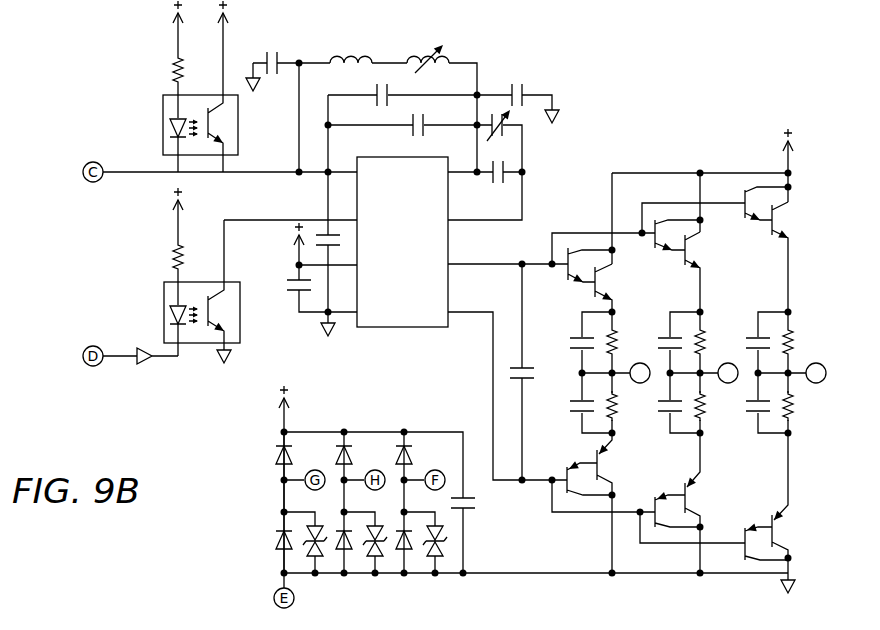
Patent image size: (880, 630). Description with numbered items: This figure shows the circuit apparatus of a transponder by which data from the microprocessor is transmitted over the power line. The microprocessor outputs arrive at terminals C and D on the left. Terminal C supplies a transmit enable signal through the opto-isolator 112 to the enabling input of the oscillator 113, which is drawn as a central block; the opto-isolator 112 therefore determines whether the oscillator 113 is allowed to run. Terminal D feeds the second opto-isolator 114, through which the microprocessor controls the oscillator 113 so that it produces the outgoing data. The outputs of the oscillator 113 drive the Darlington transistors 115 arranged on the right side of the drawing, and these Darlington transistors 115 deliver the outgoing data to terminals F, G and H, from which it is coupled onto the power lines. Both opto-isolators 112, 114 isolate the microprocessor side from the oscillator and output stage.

The opto-isolator 112 is at (185, 155).
The oscillator 113 is at (395, 327).
The opto-isolator 114 is at (202, 343).
The Darlington transistors 115 is at (805, 308).